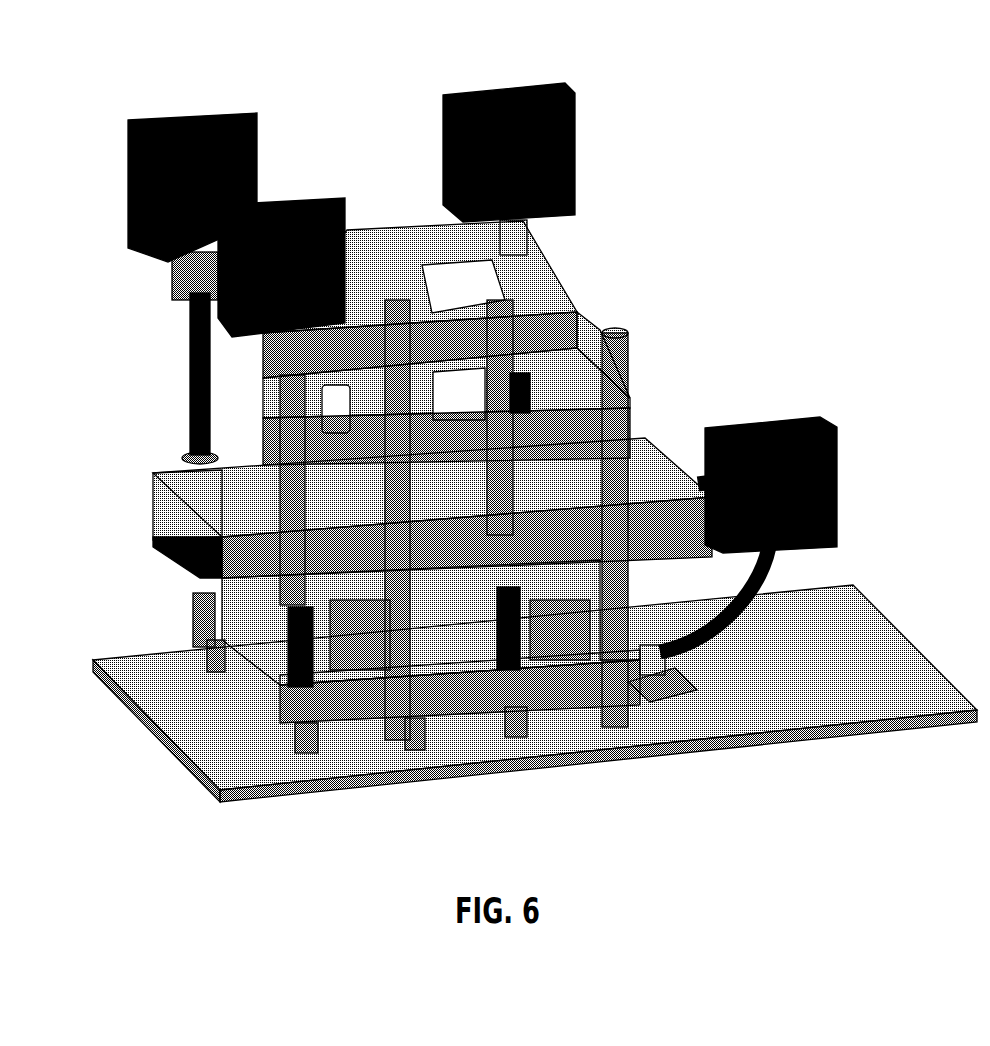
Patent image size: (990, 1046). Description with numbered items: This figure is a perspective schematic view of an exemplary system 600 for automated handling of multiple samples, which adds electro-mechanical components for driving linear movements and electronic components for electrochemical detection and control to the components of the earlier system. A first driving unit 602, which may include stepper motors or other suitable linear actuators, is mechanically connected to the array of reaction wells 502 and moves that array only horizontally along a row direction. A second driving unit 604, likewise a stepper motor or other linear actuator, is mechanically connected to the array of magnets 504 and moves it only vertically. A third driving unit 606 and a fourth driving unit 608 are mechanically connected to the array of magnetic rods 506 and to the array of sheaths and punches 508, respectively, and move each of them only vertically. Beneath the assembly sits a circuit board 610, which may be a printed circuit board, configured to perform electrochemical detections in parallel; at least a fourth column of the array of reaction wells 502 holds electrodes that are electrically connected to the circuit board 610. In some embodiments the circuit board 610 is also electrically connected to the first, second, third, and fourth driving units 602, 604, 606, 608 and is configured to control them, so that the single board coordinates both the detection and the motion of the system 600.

The system 600 is at (537, 31).
The first driving unit 602 is at (818, 421).
The second driving unit 604 is at (320, 204).
The third driving unit 606 is at (573, 110).
The fourth driving unit 608 is at (248, 122).
The circuit board 610 is at (866, 628).
The array of reaction wells 502 is at (657, 443).
The array of magnets 504 is at (195, 605).
The array of magnetic rods 506 is at (190, 355).
The array of sheaths and punches 508 is at (190, 453).